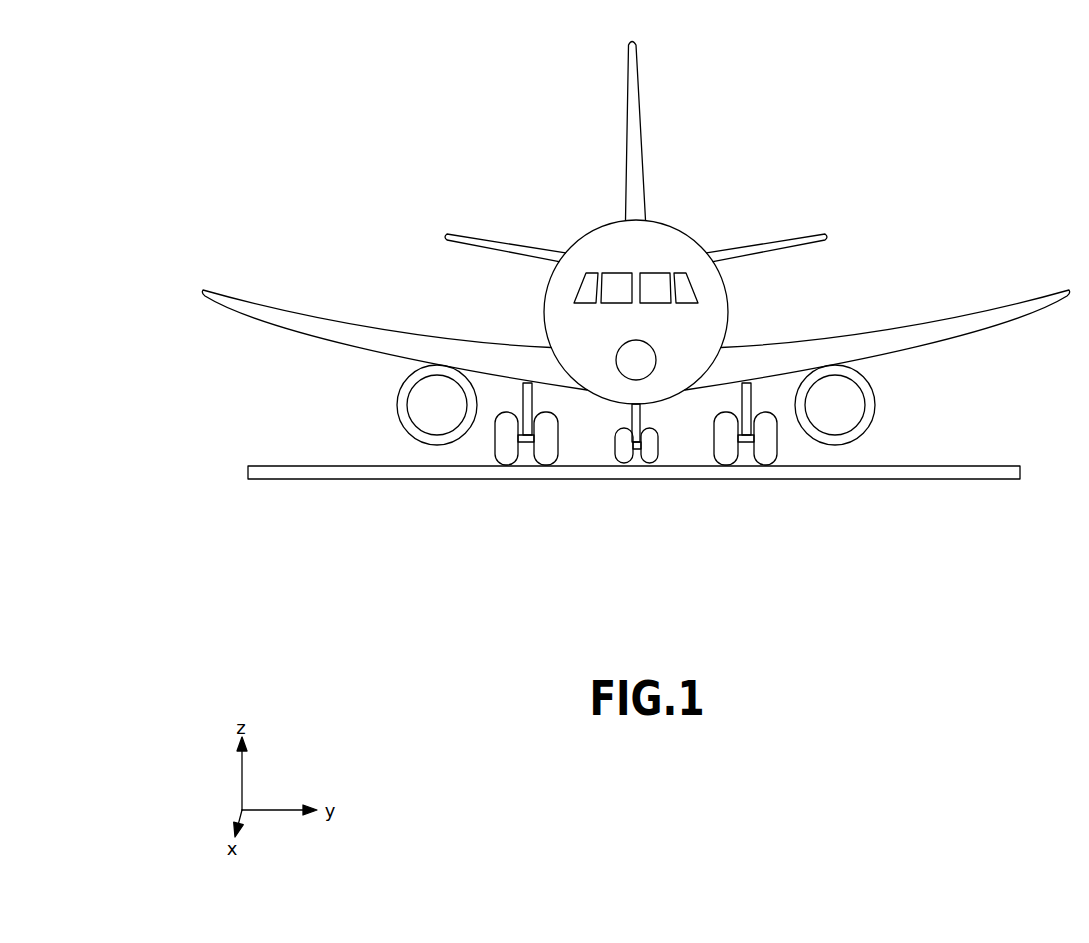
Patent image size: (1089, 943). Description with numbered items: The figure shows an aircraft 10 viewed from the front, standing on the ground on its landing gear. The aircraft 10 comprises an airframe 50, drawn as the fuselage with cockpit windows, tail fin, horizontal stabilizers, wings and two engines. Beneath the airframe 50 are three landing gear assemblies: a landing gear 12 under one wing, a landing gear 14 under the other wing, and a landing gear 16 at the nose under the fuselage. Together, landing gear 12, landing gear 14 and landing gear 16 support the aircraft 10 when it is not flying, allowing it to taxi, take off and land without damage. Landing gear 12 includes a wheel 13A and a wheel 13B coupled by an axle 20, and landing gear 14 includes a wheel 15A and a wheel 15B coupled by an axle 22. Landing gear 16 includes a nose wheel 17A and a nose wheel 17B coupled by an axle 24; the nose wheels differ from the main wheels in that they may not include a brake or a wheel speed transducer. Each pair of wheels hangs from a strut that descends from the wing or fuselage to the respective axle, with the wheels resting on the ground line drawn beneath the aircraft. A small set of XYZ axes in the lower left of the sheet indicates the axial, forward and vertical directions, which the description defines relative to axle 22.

The aircraft 10 is at (462, 123).
The landing gear 12 is at (801, 444).
The wheel 13A is at (780, 450).
The wheel 13B is at (733, 410).
The landing gear 14 is at (469, 447).
The wheel 15A is at (497, 457).
The wheel 15B is at (562, 455).
The landing gear 16 is at (675, 418).
The nose wheel 17A is at (658, 455).
The nose wheel 17B is at (612, 457).
The axle 20 is at (745, 450).
The axle 22 is at (523, 447).
The axle 24 is at (633, 450).
The airframe 50 is at (553, 322).